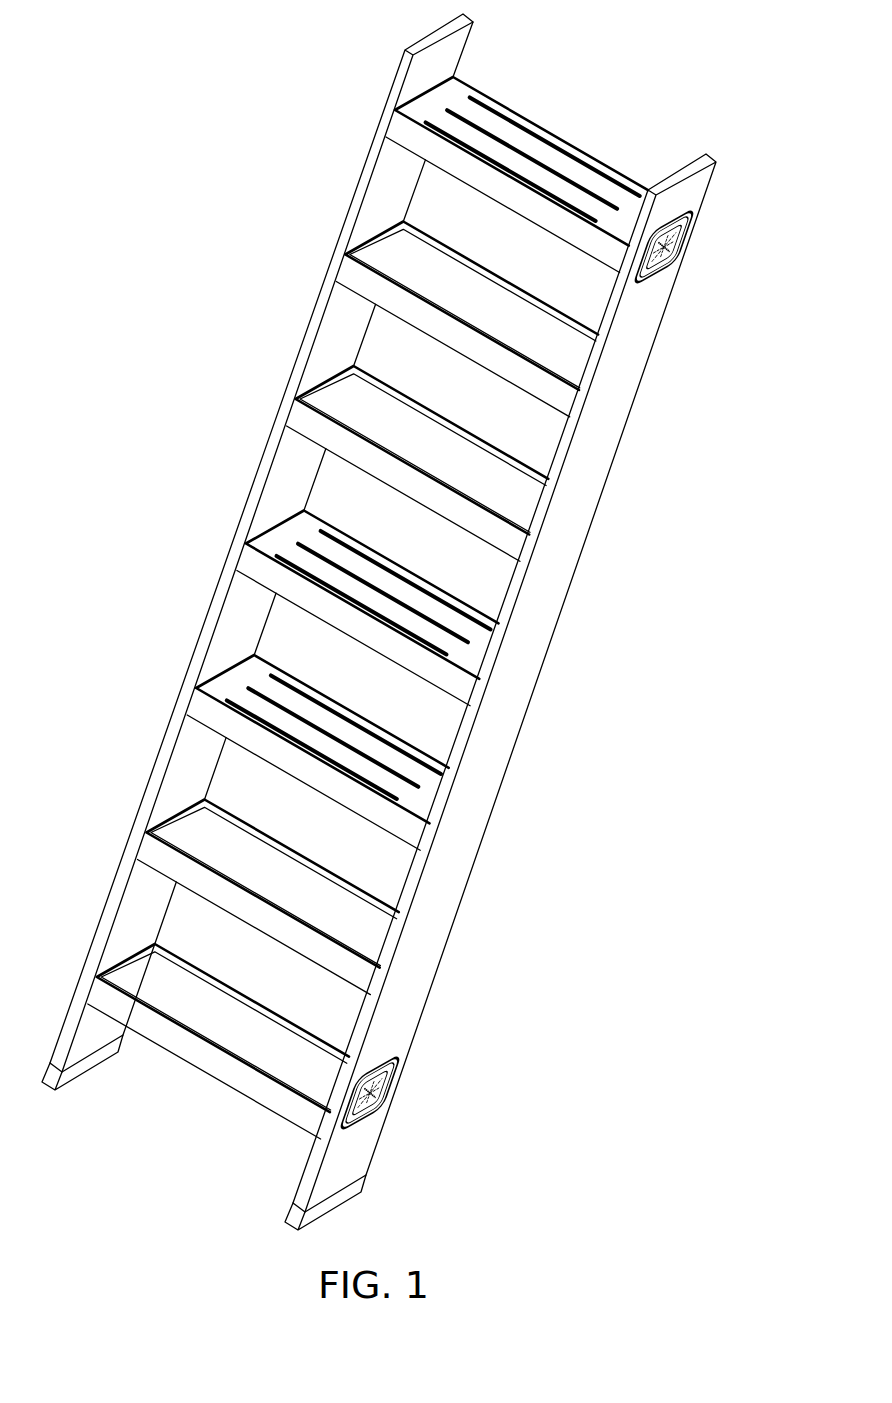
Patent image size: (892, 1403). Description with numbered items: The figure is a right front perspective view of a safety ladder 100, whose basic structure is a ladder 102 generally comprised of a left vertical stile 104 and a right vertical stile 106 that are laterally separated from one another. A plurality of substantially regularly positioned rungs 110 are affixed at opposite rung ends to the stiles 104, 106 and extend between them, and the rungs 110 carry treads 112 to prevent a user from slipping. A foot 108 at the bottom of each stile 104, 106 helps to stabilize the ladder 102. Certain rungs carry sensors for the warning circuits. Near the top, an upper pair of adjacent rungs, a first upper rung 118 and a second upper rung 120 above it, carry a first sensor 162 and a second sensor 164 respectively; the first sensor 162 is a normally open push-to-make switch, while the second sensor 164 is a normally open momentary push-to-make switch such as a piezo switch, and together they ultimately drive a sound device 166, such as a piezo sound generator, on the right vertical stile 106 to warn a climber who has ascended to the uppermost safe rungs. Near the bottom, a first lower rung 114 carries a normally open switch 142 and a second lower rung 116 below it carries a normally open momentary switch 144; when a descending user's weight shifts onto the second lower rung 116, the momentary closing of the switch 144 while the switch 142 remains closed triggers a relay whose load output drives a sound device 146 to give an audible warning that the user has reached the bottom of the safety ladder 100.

The safety ladder 100 is at (207, 158).
The ladder 102 is at (189, 613).
The left vertical stile 104 is at (262, 455).
The right vertical stile 106 is at (605, 490).
The foot 108 is at (102, 1067).
The rungs 110 is at (497, 103).
The treads 112 is at (548, 162).
The first lower rung 114 is at (178, 887).
The second lower rung 116 is at (215, 1069).
The first upper rung 118 is at (343, 465).
The second upper rung 120 is at (390, 315).
The normally open switch 142 is at (248, 821).
The normally open momentary switch 144 is at (235, 997).
The sound device 146 is at (390, 1062).
The first sensor 162 is at (492, 410).
The second sensor 164 is at (437, 248).
The sound device 166 is at (683, 272).